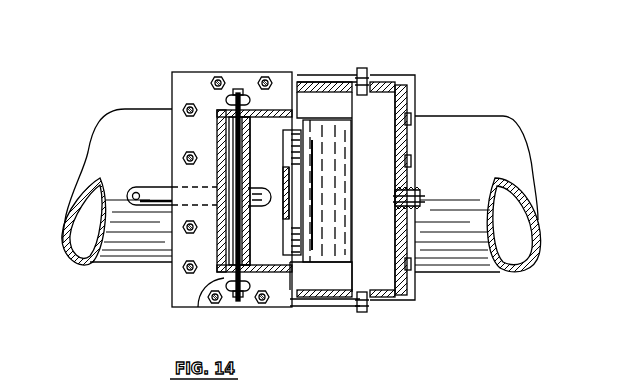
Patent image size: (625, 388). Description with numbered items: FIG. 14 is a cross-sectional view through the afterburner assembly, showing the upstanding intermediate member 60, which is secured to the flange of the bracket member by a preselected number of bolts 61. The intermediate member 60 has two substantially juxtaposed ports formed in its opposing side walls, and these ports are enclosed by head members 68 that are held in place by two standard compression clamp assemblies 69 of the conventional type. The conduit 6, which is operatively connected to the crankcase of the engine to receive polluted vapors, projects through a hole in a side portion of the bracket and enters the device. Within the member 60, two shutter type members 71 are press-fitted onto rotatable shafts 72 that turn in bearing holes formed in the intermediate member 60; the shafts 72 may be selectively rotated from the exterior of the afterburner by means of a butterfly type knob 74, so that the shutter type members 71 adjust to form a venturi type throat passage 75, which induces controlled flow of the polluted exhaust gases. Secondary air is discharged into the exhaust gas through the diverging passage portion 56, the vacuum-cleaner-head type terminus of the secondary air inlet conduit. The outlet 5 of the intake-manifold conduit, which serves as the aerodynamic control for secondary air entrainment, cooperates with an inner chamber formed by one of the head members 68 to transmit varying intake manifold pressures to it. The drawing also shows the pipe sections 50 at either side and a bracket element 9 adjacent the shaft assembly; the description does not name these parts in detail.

The outlet 5 is at (396, 196).
The conduit 6 is at (152, 201).
The bracket 9 is at (263, 206).
The pipe 50 is at (475, 130).
The diverging passage portion 56 is at (298, 218).
The intermediate member 60 is at (185, 152).
The bolts 61 is at (266, 77).
The head members 68 is at (404, 76).
The compression clamp assemblies 69 is at (365, 75).
The shutter type members 71 is at (247, 137).
The rotatable shafts 72 is at (245, 180).
The butterfly type knob 74 is at (209, 307).
The venturi type throat passage 75 is at (308, 217).